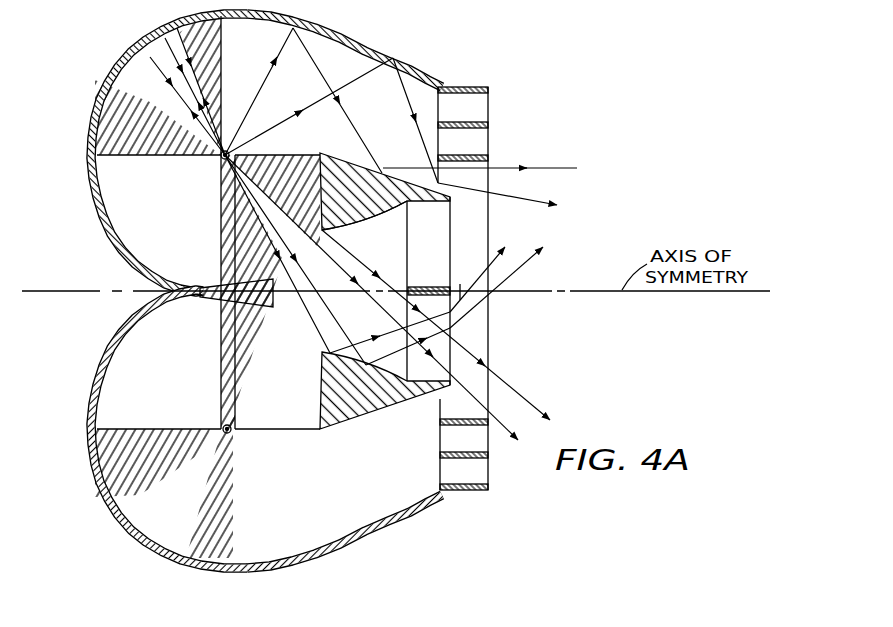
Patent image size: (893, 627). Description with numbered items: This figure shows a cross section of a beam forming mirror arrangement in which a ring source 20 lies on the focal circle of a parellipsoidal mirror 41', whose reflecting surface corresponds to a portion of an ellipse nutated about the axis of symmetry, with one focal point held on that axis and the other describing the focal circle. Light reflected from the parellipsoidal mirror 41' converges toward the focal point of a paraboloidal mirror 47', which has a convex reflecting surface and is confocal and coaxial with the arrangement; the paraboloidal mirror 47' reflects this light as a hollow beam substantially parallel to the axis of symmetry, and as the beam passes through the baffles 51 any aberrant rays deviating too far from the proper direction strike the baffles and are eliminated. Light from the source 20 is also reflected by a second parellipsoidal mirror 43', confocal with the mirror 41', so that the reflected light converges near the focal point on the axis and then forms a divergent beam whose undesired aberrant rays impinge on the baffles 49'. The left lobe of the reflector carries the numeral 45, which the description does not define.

The ring source 20 is at (220, 193).
The parellipsoidal mirror 41' is at (344, 45).
The parellipsoidal mirror 43' is at (385, 315).
The reflector lobe 45 is at (117, 75).
The paraboloidal mirror 47' is at (382, 171).
The baffles 49' is at (446, 291).
The baffles 51 is at (477, 157).